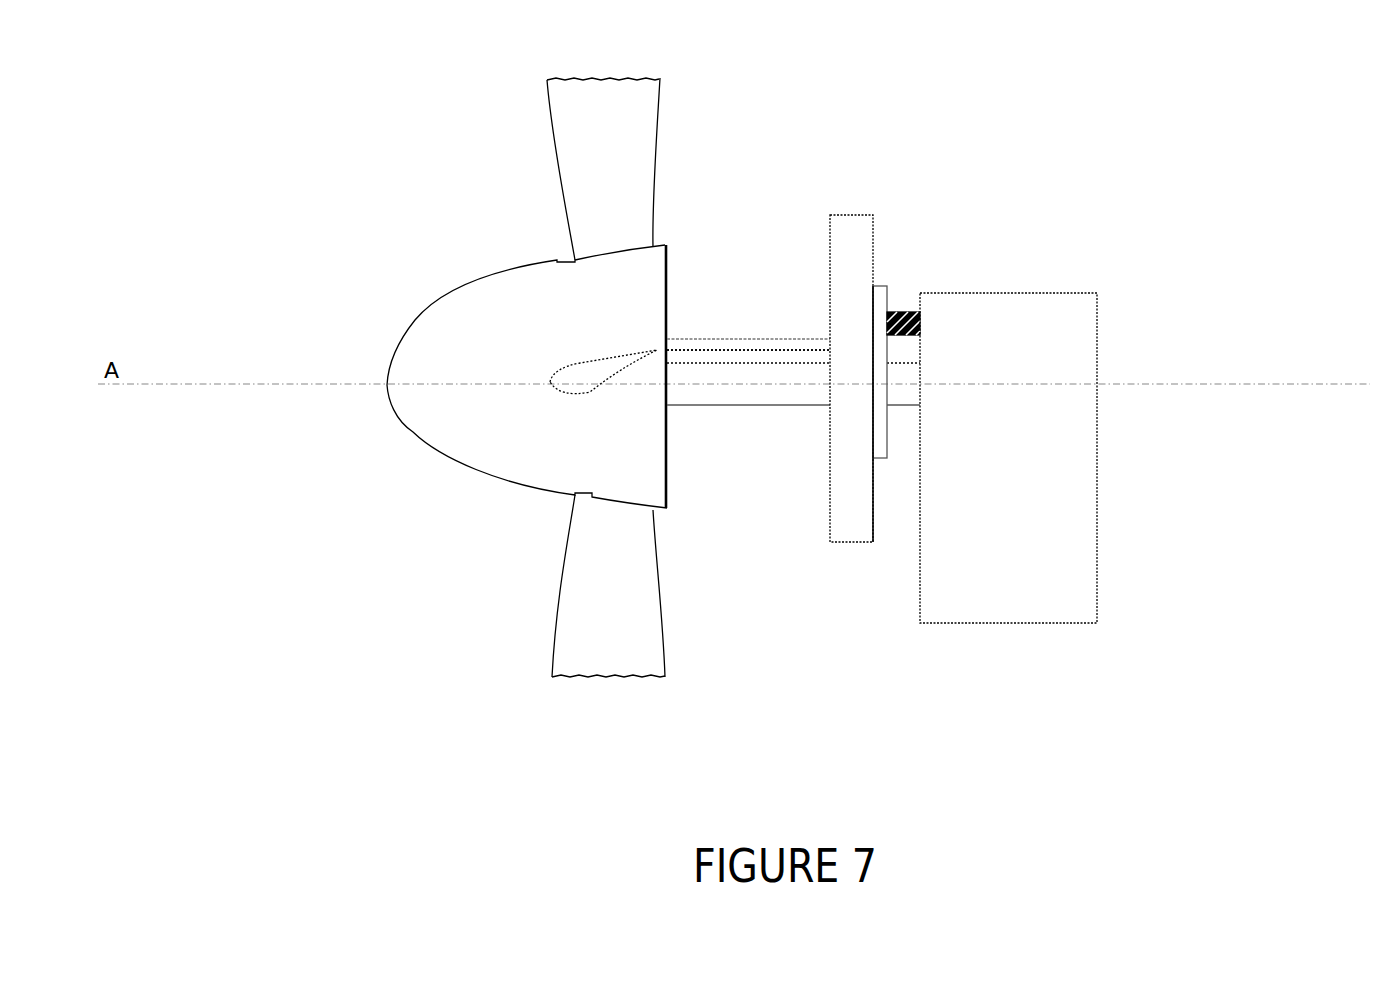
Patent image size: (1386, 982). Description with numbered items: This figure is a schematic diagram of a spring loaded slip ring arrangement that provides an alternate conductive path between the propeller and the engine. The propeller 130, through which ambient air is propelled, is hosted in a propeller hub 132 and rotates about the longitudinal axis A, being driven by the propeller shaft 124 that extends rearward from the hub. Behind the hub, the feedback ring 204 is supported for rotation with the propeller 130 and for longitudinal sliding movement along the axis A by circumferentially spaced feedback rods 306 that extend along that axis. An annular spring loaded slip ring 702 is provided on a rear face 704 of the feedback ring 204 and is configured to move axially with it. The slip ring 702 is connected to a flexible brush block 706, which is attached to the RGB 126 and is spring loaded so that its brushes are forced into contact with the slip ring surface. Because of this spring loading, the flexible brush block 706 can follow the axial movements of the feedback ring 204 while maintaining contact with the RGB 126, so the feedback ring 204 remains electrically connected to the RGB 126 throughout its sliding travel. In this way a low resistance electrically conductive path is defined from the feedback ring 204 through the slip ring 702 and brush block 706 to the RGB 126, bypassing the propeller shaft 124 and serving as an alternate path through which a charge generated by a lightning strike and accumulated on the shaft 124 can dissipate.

The propeller 130 is at (568, 118).
The propeller hub 132 is at (485, 342).
The propeller shaft 124 is at (825, 400).
The feedback rods 306 is at (722, 347).
The feedback ring 204 is at (830, 252).
The spring loaded slip ring 702 is at (880, 447).
The rear face 704 is at (872, 512).
The flexible brush block 706 is at (903, 312).
The RGB 126 is at (1060, 623).